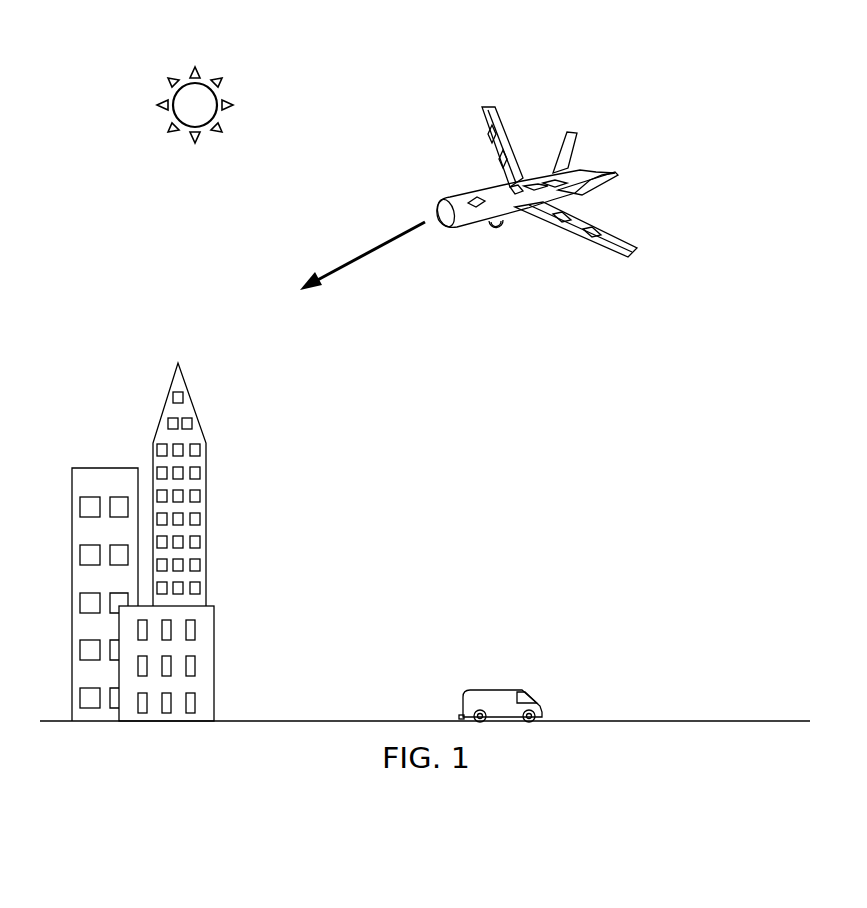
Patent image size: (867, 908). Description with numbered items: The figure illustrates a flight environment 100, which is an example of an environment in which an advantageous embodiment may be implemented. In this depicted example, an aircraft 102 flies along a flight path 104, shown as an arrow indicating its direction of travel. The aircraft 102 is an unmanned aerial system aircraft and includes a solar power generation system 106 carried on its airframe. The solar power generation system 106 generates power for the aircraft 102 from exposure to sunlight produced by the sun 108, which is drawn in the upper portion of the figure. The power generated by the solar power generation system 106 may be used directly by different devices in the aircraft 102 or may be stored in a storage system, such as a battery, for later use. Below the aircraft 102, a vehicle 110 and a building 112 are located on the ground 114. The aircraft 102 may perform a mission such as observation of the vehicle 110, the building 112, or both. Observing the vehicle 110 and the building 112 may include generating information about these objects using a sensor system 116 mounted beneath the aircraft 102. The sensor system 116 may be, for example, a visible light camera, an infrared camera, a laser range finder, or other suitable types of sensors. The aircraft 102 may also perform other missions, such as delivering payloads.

The flight environment 100 is at (584, 60).
The aircraft 102 is at (630, 210).
The flight path 104 is at (365, 252).
The solar power generation system 106 is at (532, 182).
The sun 108 is at (210, 82).
The vehicle 110 is at (493, 690).
The building 112 is at (165, 403).
The ground 114 is at (682, 720).
The sensor system 116 is at (498, 226).